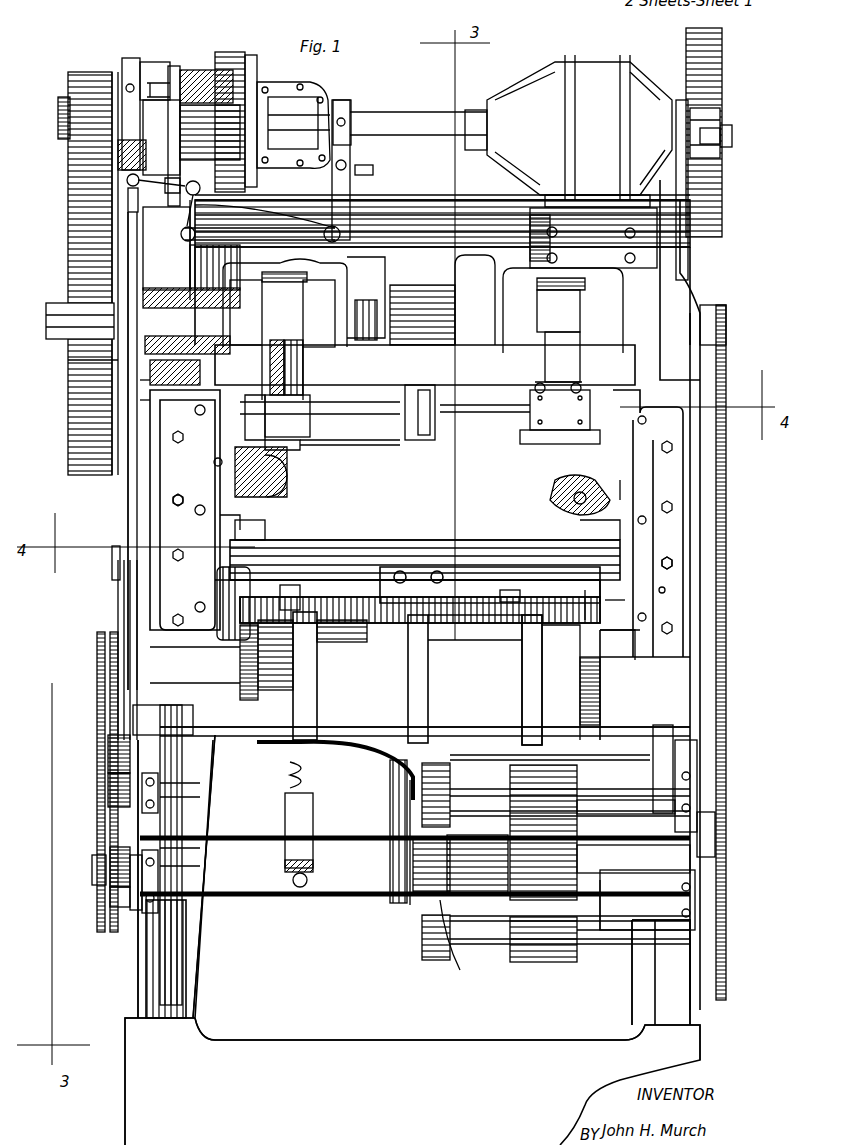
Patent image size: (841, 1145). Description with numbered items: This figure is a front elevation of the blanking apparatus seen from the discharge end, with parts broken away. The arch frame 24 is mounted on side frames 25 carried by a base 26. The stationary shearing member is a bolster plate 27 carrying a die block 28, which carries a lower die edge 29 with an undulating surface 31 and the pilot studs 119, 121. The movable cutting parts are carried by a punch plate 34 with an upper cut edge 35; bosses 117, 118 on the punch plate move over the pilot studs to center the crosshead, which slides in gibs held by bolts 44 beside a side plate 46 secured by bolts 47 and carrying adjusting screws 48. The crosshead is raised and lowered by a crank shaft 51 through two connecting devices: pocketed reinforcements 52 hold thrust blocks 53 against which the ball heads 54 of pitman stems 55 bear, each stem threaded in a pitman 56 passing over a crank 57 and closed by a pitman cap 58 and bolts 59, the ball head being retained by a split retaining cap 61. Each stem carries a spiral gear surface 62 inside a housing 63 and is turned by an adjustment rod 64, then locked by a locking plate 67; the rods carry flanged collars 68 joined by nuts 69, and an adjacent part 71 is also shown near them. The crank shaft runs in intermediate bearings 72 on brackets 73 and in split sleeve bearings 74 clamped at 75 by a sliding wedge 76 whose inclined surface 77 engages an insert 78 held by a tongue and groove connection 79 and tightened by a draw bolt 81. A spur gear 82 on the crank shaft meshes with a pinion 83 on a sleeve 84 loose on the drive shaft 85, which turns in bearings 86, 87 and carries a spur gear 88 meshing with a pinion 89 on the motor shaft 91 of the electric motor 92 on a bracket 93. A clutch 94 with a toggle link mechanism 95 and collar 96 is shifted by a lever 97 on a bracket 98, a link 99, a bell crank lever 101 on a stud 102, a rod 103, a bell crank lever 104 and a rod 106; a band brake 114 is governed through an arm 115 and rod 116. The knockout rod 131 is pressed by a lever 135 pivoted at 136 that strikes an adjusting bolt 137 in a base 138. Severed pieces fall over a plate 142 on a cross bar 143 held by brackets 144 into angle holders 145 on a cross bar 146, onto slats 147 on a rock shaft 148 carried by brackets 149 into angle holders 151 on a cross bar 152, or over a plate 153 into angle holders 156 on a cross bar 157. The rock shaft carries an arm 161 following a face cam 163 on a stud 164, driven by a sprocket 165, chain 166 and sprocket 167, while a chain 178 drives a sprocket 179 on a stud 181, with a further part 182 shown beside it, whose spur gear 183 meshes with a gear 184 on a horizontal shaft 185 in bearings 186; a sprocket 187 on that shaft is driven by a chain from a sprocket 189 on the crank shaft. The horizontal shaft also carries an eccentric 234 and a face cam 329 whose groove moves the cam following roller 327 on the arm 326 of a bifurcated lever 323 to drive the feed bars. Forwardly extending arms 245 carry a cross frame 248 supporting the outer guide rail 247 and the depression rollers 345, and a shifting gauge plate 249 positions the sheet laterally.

The arch frame 24 is at (418, 205).
The side frames 25 is at (178, 958).
The base 26 is at (302, 1055).
The bolster plate 27 is at (600, 712).
The die block 28 is at (603, 650).
The lower die edge 29 is at (553, 628).
The undulating surface 31 is at (498, 625).
The punch plate 34 is at (590, 530).
The upper cut edge 35 is at (555, 560).
The bolts 44 is at (213, 462).
The side plate 46 is at (168, 473).
The bolts 47 is at (176, 500).
The adjusting screws 48 is at (195, 410).
The crank shaft 51 is at (420, 318).
The pocketed reinforcements 52 is at (238, 476).
The thrust block 53 is at (284, 484).
The ball head 54 is at (302, 442).
The pitman stem 55 is at (300, 350).
The pitman 56 is at (270, 350).
The crank 57 is at (330, 296).
The pitman cap 58 is at (350, 266).
The bolts 59 is at (292, 272).
The split retaining cap 61 is at (520, 440).
The spiral gear surface 62 is at (312, 405).
The housing 63 is at (545, 416).
The adjustment rod 64 is at (488, 410).
The locking plate 67 is at (305, 382).
The flanged collars 68 is at (413, 390).
The nuts 69 is at (430, 388).
The shaft 71 is at (400, 422).
The intermediate bearings 72 is at (378, 306).
The brackets 73 is at (478, 290).
The split sleeve bearings 74 is at (75, 296).
The clamp 75 is at (160, 278).
The sliding wedge 76 is at (75, 370).
The inclined surface 77 is at (150, 372).
The insert 78 is at (150, 385).
The tongue and groove connection 79 is at (150, 405).
The draw bolt 81 is at (200, 324).
The spur gear 82 is at (80, 249).
The pinion 83 is at (126, 88).
The sleeve 84 is at (65, 104).
The drive shaft 85 is at (380, 114).
The bearing 86 is at (85, 148).
The bearing 87 is at (690, 197).
The spur gear 88 is at (727, 56).
The pinion 89 is at (724, 118).
The motor shaft 91 is at (735, 142).
The electric motor 92 is at (605, 92).
The bracket 93 is at (620, 249).
The clutch 94 is at (245, 52).
The toggle link mechanism 95 is at (300, 100).
The collar 96 is at (345, 103).
The lever 97 is at (342, 160).
The bracket 98 is at (370, 176).
The link 99 is at (280, 230).
The bell crank lever 101 is at (140, 190).
The stud 102 is at (200, 192).
The rod 103 is at (128, 430).
The bell crank lever 104 is at (122, 614).
The rod 106 is at (140, 668).
The band brake 114 is at (130, 118).
The arm 115 is at (147, 62).
The rod 116 is at (178, 70).
The apertured boss 117 is at (228, 522).
The apertured boss 118 is at (653, 563).
The pilot stud 119 is at (232, 596).
The pilot stud 121 is at (590, 596).
The knockout rod 131 is at (574, 500).
The lever 135 is at (588, 490).
The pivot 136 is at (630, 490).
The adjusting bolt 137 is at (636, 598).
The base 138 is at (653, 582).
The plate 142 is at (462, 900).
The cross bar 143 is at (655, 845).
The brackets 144 is at (660, 903).
The angle holders 145 is at (545, 950).
The cross bar 146 is at (610, 933).
The slats 147 is at (522, 688).
The rock shaft 148 is at (460, 730).
The brackets 149 is at (175, 762).
The angle holders 151 is at (510, 778).
The cross bar 152 is at (592, 802).
The plate 153 is at (562, 758).
The angle holders 156 is at (490, 900).
The cross bar 157 is at (610, 868).
The arm 161 is at (150, 718).
The face cam 163 is at (118, 735).
The stud 164 is at (120, 773).
The sprocket 165 is at (118, 750).
The chain 166 is at (110, 658).
The sprocket 167 is at (112, 560).
The chain 178 is at (105, 640).
The sprocket 179 is at (110, 888).
The stud 181 is at (92, 866).
The bar 182 is at (133, 892).
The spur gear 183 is at (115, 902).
The gear 184 is at (128, 832).
The horizontal shaft 185 is at (247, 815).
The bearings 186 is at (130, 817).
The sprocket 187 is at (700, 820).
The sprocket 189 is at (718, 325).
The eccentric 234 is at (294, 888).
The forwardly extending arms 245 is at (430, 545).
The outer guide rail 247 is at (290, 605).
The cross frame 248 is at (518, 596).
The shifting gauge plate 249 is at (265, 540).
The bifurcated lever 323 is at (375, 742).
The arm 326 is at (360, 875).
The cam following roller 327 is at (380, 888).
The face cam 329 is at (400, 908).
The depression rollers 345 is at (330, 662).